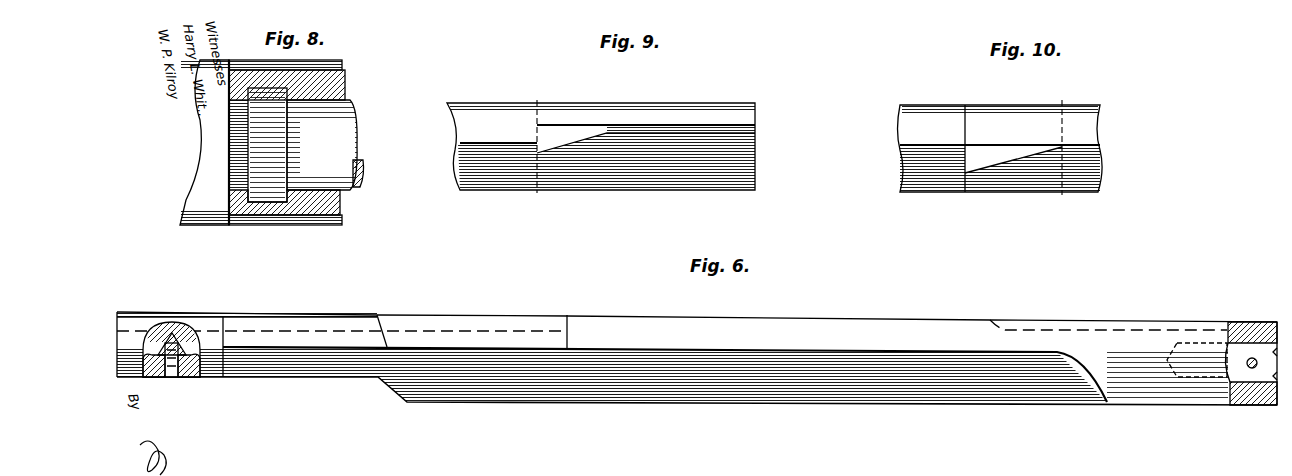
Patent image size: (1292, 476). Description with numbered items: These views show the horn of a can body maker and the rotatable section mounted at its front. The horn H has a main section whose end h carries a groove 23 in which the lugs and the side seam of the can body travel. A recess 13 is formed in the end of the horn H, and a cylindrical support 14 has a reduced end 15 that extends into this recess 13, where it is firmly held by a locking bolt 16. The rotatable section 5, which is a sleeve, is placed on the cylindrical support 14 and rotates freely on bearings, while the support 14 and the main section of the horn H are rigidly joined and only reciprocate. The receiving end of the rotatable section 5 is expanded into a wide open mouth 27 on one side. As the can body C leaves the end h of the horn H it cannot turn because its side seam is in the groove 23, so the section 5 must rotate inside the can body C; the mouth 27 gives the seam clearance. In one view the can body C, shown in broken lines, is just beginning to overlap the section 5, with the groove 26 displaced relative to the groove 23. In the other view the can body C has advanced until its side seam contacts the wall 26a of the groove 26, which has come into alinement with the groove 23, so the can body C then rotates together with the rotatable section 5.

In FIG. 8, the rotatable section 5 is at (340, 212).
In FIG. 9, the rotatable section 5 is at (664, 176).
In FIG. 10, the rotatable section 5 is at (1088, 185).
In FIG. 8, the cylindrical support 14 is at (296, 145).
In FIG. 8, the end of the horn h is at (204, 142).
In FIG. 9, the end of the horn h is at (490, 183).
In FIG. 10, the end of the horn h is at (938, 182).
In FIG. 6, the end of the horn h is at (1200, 394).
In FIG. 8, the horn H is at (287, 200).
In FIG. 6, the horn H is at (697, 376).
In FIG. 9, the can body C is at (538, 100).
In FIG. 10, the can body C is at (1054, 103).
In FIG. 9, the groove 23 is at (473, 146).
In FIG. 10, the groove 23 is at (910, 147).
In FIG. 6, the groove 23 is at (1248, 328).
In FIG. 9, the groove 26 is at (740, 128).
In FIG. 10, the groove 26 is at (1090, 148).
In FIG. 9, the wall of the groove 26a is at (582, 127).
In FIG. 10, the wall of the groove 26a is at (1020, 149).
In FIG. 9, the wide open mouth 27 is at (549, 137).
In FIG. 10, the wide open mouth 27 is at (977, 158).
In FIG. 6, the locking bolt 16 is at (1250, 360).
In FIG. 6, the reduced end 15 is at (1247, 374).
In FIG. 6, the recess 13 is at (1280, 378).